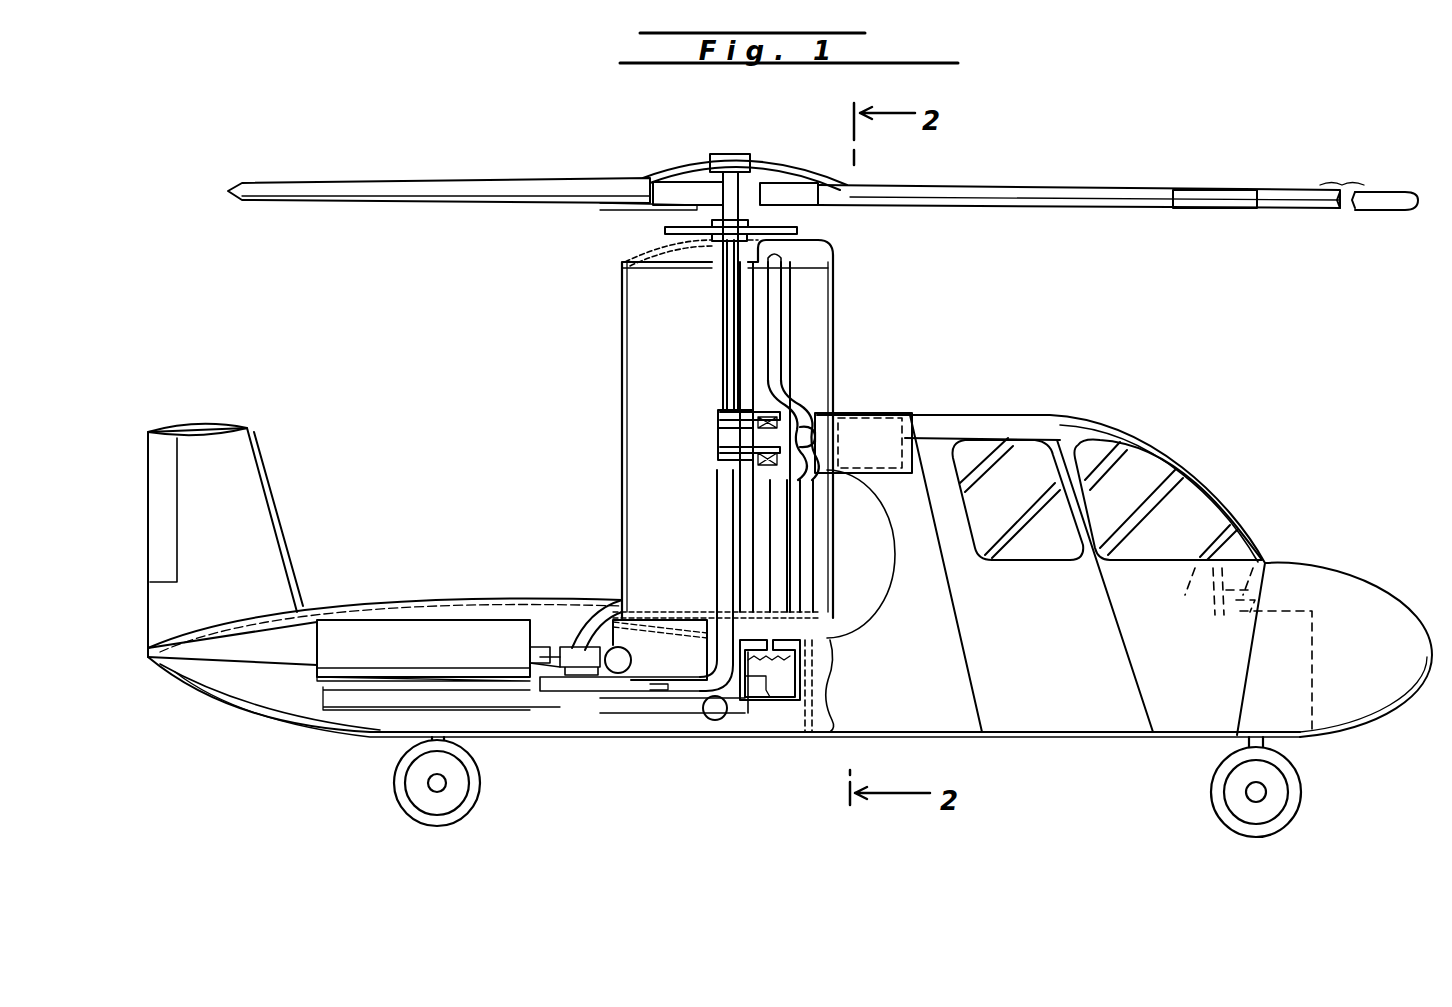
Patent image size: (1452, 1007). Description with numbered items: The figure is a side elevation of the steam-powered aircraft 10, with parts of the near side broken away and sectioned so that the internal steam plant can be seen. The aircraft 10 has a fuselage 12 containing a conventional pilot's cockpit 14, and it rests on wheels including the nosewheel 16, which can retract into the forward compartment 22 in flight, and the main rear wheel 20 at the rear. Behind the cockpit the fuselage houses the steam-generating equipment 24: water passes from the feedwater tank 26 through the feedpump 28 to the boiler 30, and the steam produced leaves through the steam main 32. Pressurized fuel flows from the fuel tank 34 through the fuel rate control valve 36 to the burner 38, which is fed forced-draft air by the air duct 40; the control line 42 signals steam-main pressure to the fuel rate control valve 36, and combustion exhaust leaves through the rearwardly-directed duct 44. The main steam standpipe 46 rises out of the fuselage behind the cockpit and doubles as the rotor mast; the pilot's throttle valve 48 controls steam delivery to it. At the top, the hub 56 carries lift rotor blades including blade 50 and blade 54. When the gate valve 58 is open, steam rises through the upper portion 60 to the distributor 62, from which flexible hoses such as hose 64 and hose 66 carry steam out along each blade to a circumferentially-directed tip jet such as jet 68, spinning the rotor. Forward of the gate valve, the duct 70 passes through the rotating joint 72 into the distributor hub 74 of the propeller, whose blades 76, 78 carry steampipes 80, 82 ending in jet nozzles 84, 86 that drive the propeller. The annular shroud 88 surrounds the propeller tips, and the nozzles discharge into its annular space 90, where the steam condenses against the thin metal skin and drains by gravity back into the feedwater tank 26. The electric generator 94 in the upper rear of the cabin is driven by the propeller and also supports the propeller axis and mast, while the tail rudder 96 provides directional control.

The steam-powered aircraft 10 is at (1090, 378).
The fuselage 12 is at (902, 745).
The pilot's cockpit 14 is at (1240, 547).
The nosewheel 16 is at (1215, 788).
The main rear wheel 20 is at (480, 790).
The forward compartment 22 is at (1372, 690).
The steam-generating equipment 24 is at (400, 582).
The feedwater tank 26 is at (800, 686).
The feedpump 28 is at (718, 720).
The boiler 30 is at (438, 665).
The steam main 32 is at (560, 692).
The fuel tank 34 is at (640, 670).
The fuel rate control valve 36 is at (580, 650).
The burner 38 is at (540, 648).
The air duct 40 is at (610, 600).
The control line 42 is at (608, 674).
The rearwardly-directed duct 44 is at (230, 652).
The main steam standpipe 46 is at (717, 545).
The throttle valve 48 is at (676, 713).
The lift rotor blade 50 is at (1068, 195).
The lift rotor blade 54 is at (413, 190).
The hub 56 is at (668, 190).
The gate valve 58 is at (722, 428).
The upper portion of combined mast and steam standpipe 60 is at (723, 388).
The distributor 62 is at (727, 160).
The flexible hose 64 is at (800, 180).
The flexible hose 66 is at (1206, 200).
The jet 68 is at (1408, 200).
The duct 70 is at (718, 422).
The rotating joint 72 is at (800, 402).
The distributor hub 74 is at (815, 410).
The propeller blade 76 is at (790, 288).
The propeller blade 78 is at (785, 580).
The steampipe 80 is at (785, 308).
The steampipe 82 is at (778, 540).
The jet nozzle 84 is at (805, 252).
The jet nozzle 86 is at (812, 640).
The annular shroud 88 is at (638, 309).
The annular space 90 is at (648, 258).
The electric generator 94 is at (887, 420).
The tail rudder 96 is at (270, 522).